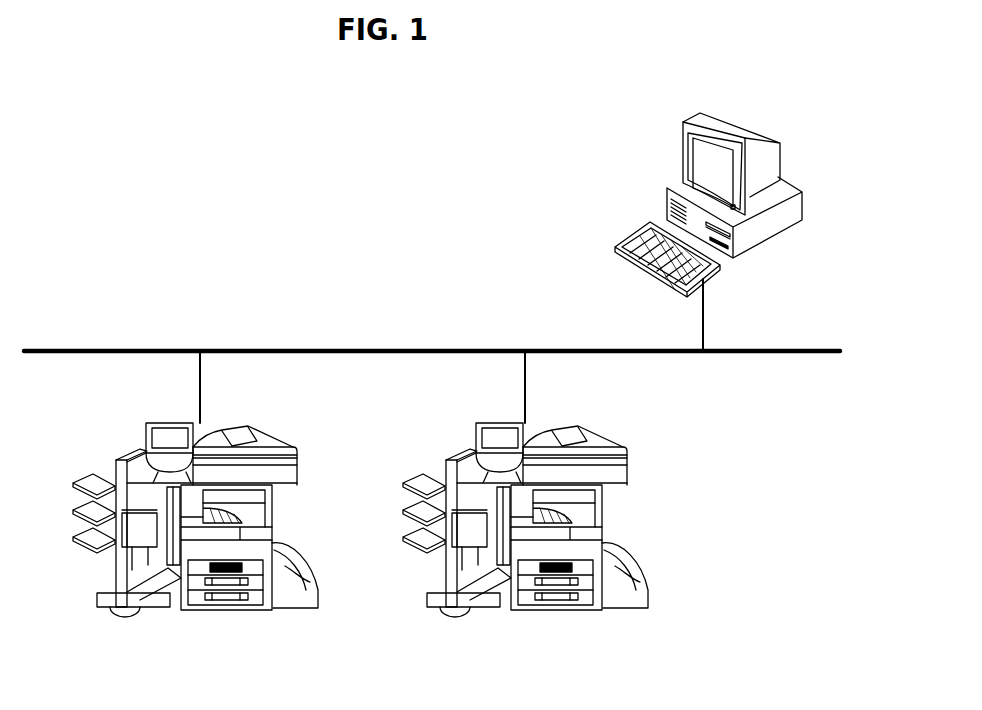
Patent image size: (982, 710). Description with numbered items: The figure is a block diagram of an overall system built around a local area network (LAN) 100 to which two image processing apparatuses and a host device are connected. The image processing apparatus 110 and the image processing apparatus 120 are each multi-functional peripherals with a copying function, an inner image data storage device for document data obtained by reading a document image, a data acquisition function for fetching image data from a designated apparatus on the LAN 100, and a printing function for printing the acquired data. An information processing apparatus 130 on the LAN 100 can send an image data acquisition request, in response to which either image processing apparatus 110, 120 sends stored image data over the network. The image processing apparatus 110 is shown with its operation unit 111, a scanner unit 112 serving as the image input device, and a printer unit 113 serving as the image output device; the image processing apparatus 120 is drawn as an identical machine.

The local area network 100 is at (742, 353).
The image processing apparatus 110 is at (206, 519).
The operation unit 111 is at (158, 438).
The scanner unit 112 is at (290, 442).
The printer unit 113 is at (268, 532).
The image processing apparatus 120 is at (655, 597).
The information processing apparatus 130 is at (753, 125).